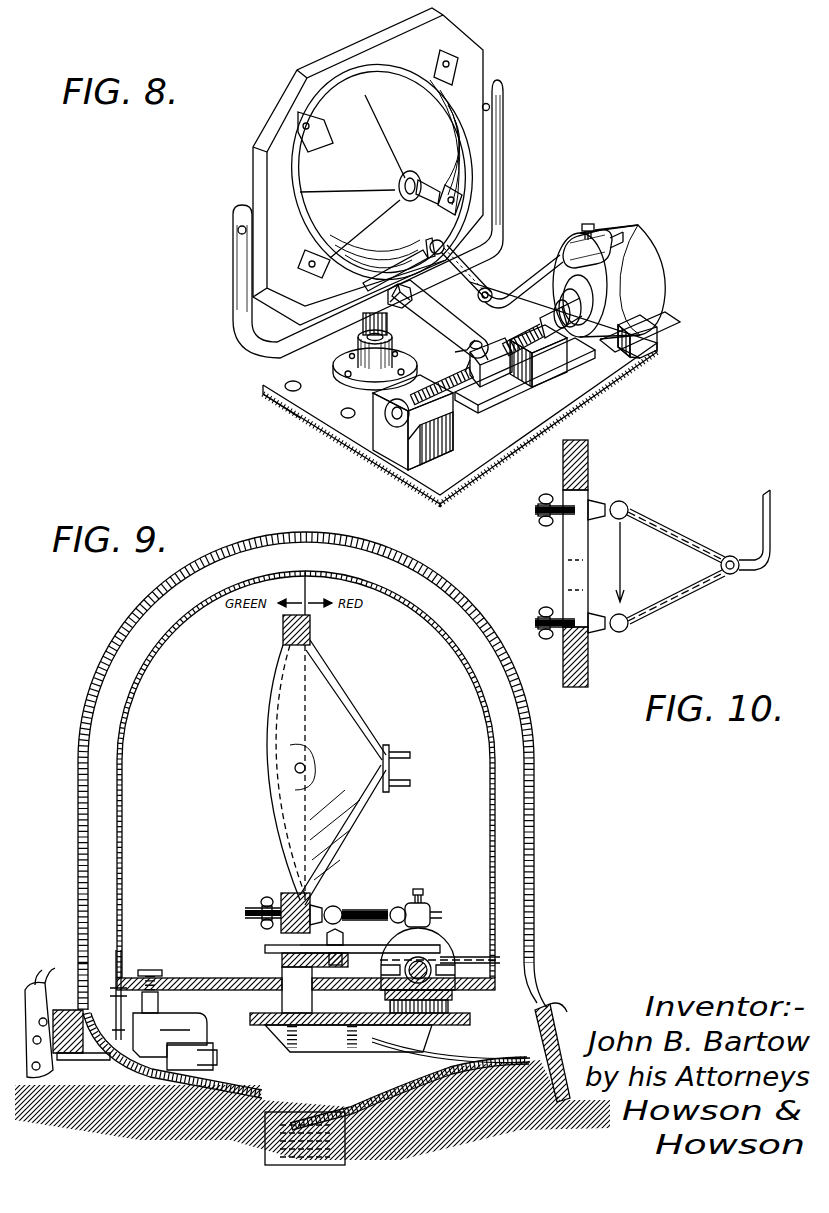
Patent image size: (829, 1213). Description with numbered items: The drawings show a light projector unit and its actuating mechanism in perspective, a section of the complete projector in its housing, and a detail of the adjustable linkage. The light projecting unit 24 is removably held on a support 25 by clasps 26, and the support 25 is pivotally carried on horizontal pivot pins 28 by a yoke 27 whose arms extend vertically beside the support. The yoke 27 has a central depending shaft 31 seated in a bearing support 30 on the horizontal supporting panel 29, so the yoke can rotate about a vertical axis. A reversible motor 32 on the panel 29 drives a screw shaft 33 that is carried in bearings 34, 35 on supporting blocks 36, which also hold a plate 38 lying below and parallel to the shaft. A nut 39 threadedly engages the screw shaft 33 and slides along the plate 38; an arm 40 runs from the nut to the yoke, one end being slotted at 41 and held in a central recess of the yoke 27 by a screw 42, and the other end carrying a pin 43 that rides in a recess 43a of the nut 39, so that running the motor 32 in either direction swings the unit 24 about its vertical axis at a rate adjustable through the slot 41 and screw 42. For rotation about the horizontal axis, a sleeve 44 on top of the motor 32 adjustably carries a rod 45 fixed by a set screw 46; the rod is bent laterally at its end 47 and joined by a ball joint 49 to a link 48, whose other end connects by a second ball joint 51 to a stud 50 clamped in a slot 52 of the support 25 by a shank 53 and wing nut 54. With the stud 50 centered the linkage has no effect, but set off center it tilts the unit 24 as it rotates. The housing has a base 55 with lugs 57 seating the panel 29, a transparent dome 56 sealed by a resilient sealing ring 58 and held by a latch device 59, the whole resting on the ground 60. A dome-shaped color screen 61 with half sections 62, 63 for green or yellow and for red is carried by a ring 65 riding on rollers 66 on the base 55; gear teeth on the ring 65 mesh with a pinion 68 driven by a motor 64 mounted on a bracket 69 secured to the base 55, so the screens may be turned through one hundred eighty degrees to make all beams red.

In FIG. 8, the light projecting unit 24 is at (345, 172).
In FIG. 9, the light projecting unit 24 is at (340, 712).
In FIG. 8, the support 25 is at (360, 52).
In FIG. 9, the support 25 is at (283, 628).
In FIG. 10, the support 25 is at (580, 680).
In FIG. 8, the clasps 26 is at (446, 62).
In FIG. 8, the yoke 27 is at (503, 148).
In FIG. 9, the yoke 27 is at (285, 945).
In FIG. 8, the horizontal pivot pins 28 is at (490, 112).
In FIG. 9, the horizontal pivot pins 28 is at (295, 768).
In FIG. 8, the horizontal supporting panel or plate 29 is at (285, 375).
In FIG. 9, the horizontal supporting panel or plate 29 is at (318, 1027).
In FIG. 8, the bearing support 30 is at (300, 405).
In FIG. 9, the bearing support 30 is at (282, 995).
In FIG. 8, the depending rod or shaft 31 is at (358, 360).
In FIG. 9, the depending rod or shaft 31 is at (282, 962).
In FIG. 8, the reversible motor 32 is at (620, 270).
In FIG. 9, the reversible motor 32 is at (456, 966).
In FIG. 8, the screw shaft 33 is at (470, 440).
In FIG. 9, the screw shaft 33 is at (418, 1013).
In FIG. 8, the bearing 34 is at (405, 395).
In FIG. 8, the bearing 35 is at (615, 352).
In FIG. 8, the supporting block 36 is at (425, 445).
In FIG. 8, the plate 38 is at (545, 380).
In FIG. 9, the plate 38 is at (398, 1002).
In FIG. 8, the nut 39 is at (478, 392).
In FIG. 9, the nut 39 is at (470, 957).
In FIG. 8, the arm 40 is at (455, 338).
In FIG. 9, the arm 40 is at (372, 954).
In FIG. 8, the slot 41 is at (372, 372).
In FIG. 8, the screw 42 is at (414, 306).
In FIG. 9, the screw 42 is at (338, 955).
In FIG. 8, the pin 43 is at (478, 343).
In FIG. 9, the pin 43 is at (440, 948).
In FIG. 8, the recess 43a is at (505, 375).
In FIG. 8, the sleeve 44 is at (600, 235).
In FIG. 9, the sleeve 44 is at (431, 910).
In FIG. 8, the rod 45 is at (612, 246).
In FIG. 9, the rod 45 is at (443, 917).
In FIG. 10, the rod 45 is at (771, 508).
In FIG. 8, the set screw 46 is at (587, 224).
In FIG. 9, the set screw 46 is at (424, 895).
In FIG. 10, the laterally bent end 47 is at (752, 571).
In FIG. 8, the link 48 is at (468, 272).
In FIG. 9, the link 48 is at (370, 911).
In FIG. 10, the link 48 is at (672, 533).
In FIG. 8, the universal or ball joint 49 is at (492, 292).
In FIG. 9, the universal or ball joint 49 is at (402, 908).
In FIG. 10, the universal or ball joint 49 is at (733, 577).
In FIG. 8, the stud 50 is at (444, 243).
In FIG. 9, the stud 50 is at (335, 906).
In FIG. 10, the stud 50 is at (619, 501).
In FIG. 8, the second universal or ball joint 51 is at (437, 256).
In FIG. 9, the second universal or ball joint 51 is at (340, 912).
In FIG. 10, the second universal or ball joint 51 is at (628, 510).
In FIG. 8, the slot 52 is at (385, 272).
In FIG. 9, the slot 52 is at (288, 900).
In FIG. 10, the slot 52 is at (572, 575).
In FIG. 9, the shank 53 is at (278, 910).
In FIG. 10, the shank 53 is at (570, 520).
In FIG. 9, the wing nut 54 is at (262, 914).
In FIG. 10, the wing nut 54 is at (538, 522).
In FIG. 9, the base 55 is at (350, 1107).
In FIG. 9, the transparent dome 56 is at (536, 790).
In FIG. 9, the lugs 57 is at (283, 1040).
In FIG. 9, the resilient sealing ring 58 is at (558, 1042).
In FIG. 9, the latch device 59 is at (55, 990).
In FIG. 9, the ground 60 is at (480, 1097).
In FIG. 9, the dome-shaped color screen 61 is at (152, 787).
In FIG. 9, the half section 62 is at (207, 717).
In FIG. 9, the half section 63 is at (395, 714).
In FIG. 9, the motor 64 is at (180, 1025).
In FIG. 9, the ring 65 is at (122, 985).
In FIG. 9, the rollers 66 is at (475, 1048).
In FIG. 9, the pinion 68 is at (155, 975).
In FIG. 9, the bracket 69 is at (262, 1110).